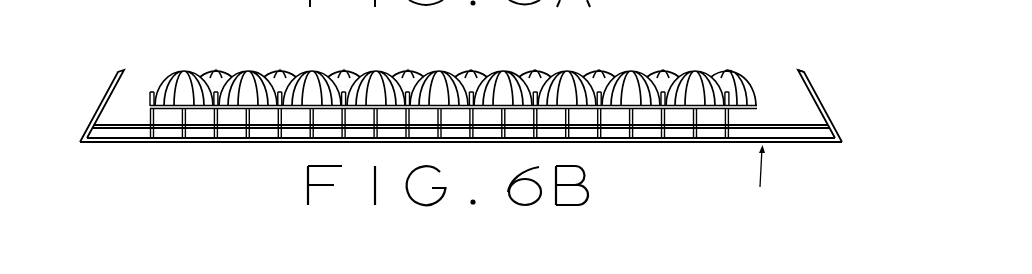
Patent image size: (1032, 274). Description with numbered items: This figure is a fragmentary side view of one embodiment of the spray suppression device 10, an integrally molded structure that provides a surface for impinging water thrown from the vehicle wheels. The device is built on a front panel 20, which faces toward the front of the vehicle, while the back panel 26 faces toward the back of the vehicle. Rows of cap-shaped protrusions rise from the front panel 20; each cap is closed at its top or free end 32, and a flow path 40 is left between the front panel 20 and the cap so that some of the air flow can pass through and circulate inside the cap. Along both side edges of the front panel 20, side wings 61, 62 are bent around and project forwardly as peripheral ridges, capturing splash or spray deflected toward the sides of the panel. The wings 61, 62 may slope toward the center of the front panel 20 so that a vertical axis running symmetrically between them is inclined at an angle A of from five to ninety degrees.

The spray suppression device 10 is at (192, 42).
The front panel 20 is at (778, 123).
The back panel 26 is at (818, 144).
The free end of the cap 32 is at (727, 68).
The flow path 40 is at (198, 143).
The side wing 61 is at (813, 94).
The side wing 62 is at (103, 98).
The angle A is at (812, 77).